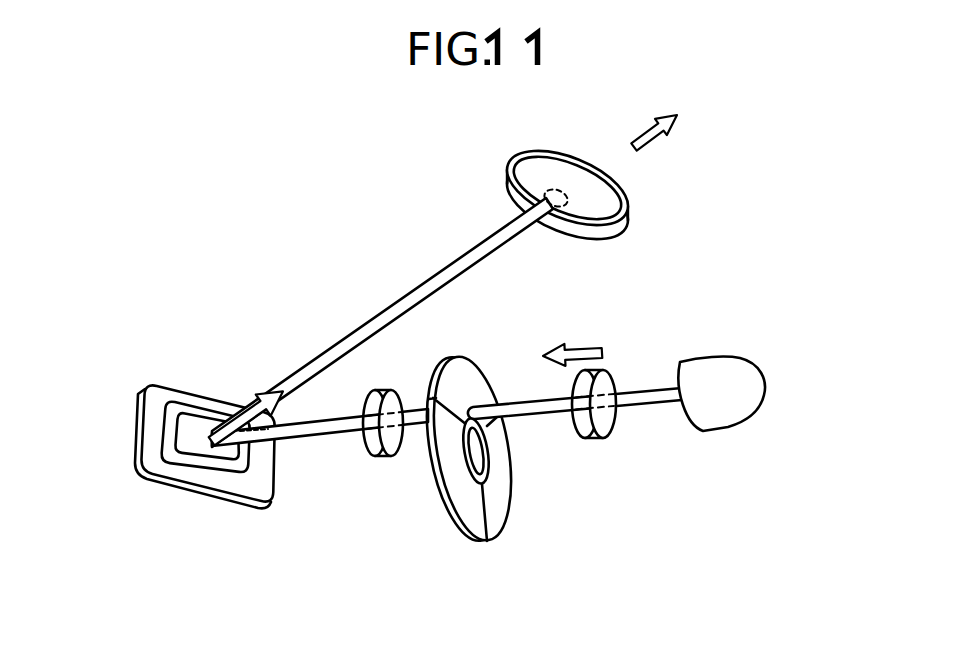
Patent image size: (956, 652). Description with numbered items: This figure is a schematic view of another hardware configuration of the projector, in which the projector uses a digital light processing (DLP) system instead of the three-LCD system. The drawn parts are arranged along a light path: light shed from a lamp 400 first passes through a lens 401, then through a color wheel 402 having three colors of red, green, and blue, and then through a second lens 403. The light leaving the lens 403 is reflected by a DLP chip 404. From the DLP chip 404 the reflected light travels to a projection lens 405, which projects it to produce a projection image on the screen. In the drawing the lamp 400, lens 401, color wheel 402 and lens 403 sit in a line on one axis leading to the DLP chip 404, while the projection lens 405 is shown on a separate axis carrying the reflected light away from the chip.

The lamp 400 is at (723, 416).
The lens 401 is at (595, 435).
The color wheel 402 is at (475, 531).
The lens 403 is at (385, 455).
The DLP chip 404 is at (166, 392).
The projection lens 405 is at (618, 205).